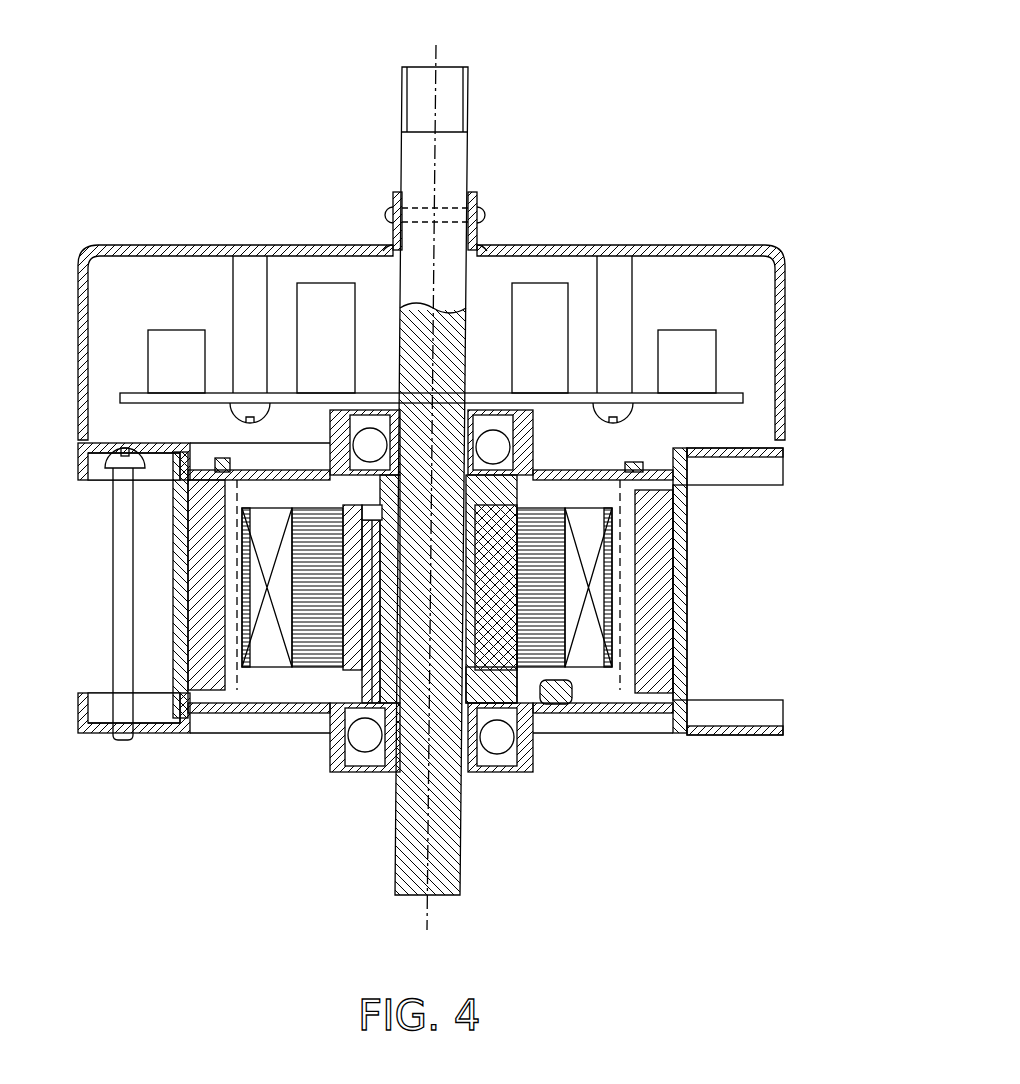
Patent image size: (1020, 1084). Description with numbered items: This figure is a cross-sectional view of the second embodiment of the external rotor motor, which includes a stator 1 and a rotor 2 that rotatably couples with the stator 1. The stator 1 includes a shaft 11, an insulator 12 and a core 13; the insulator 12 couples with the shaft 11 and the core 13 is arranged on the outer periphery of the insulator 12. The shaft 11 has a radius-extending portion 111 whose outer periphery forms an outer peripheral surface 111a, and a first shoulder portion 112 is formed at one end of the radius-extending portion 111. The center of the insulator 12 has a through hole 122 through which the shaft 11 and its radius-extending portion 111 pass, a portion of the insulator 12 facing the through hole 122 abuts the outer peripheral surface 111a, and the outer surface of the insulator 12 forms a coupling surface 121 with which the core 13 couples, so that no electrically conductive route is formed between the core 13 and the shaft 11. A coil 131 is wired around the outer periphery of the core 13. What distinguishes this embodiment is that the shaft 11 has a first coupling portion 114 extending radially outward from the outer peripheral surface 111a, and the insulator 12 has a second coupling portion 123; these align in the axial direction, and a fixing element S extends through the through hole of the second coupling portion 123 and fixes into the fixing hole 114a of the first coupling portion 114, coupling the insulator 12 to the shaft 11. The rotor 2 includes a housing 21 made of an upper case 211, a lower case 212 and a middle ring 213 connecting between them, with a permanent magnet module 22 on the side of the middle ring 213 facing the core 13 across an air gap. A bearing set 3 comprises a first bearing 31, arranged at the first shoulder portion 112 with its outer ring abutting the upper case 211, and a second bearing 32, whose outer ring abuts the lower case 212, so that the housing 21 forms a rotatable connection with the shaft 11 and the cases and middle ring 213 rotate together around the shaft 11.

The stator 1 is at (497, 453).
The shaft 11 is at (460, 160).
The insulator 12 is at (500, 530).
The core 13 is at (558, 484).
The radius-extending portion 111 is at (553, 482).
The outer peripheral surface 111a is at (483, 588).
The first shoulder portion 112 is at (372, 548).
The first coupling portion 114 is at (320, 655).
The fixing hole 114a is at (353, 648).
The coupling surface 121 is at (520, 627).
The through hole 122 is at (480, 680).
The second coupling portion 123 is at (333, 590).
The coil 131 is at (640, 545).
The rotor 2 is at (492, 589).
The housing 21 is at (789, 591).
The upper case 211 is at (780, 470).
The lower case 212 is at (780, 715).
The middle ring 213 is at (680, 520).
The permanent magnet module 22 is at (658, 660).
The bearing set 3 is at (252, 657).
The first bearing 31 is at (140, 742).
The second bearing 32 is at (352, 747).
The fixing element S is at (345, 500).